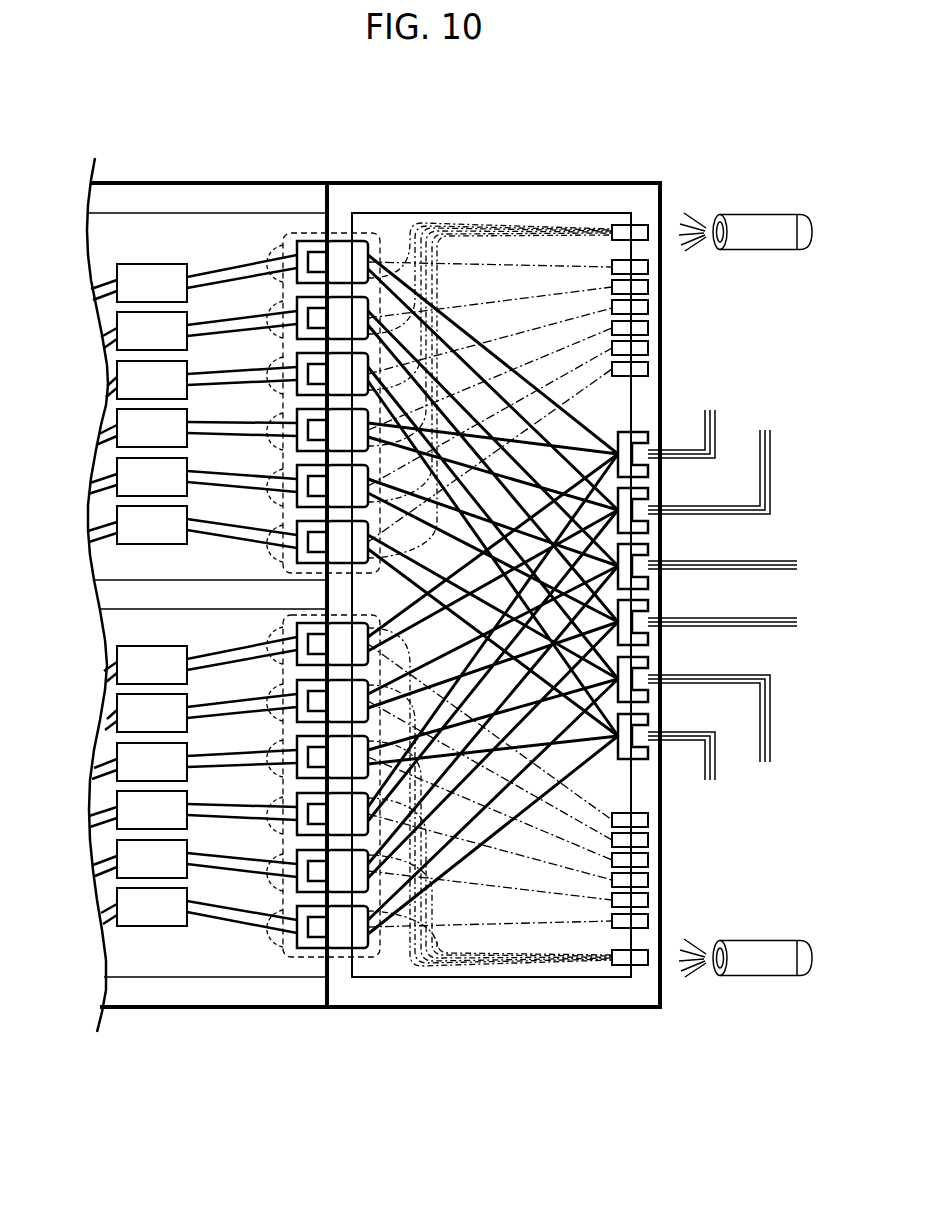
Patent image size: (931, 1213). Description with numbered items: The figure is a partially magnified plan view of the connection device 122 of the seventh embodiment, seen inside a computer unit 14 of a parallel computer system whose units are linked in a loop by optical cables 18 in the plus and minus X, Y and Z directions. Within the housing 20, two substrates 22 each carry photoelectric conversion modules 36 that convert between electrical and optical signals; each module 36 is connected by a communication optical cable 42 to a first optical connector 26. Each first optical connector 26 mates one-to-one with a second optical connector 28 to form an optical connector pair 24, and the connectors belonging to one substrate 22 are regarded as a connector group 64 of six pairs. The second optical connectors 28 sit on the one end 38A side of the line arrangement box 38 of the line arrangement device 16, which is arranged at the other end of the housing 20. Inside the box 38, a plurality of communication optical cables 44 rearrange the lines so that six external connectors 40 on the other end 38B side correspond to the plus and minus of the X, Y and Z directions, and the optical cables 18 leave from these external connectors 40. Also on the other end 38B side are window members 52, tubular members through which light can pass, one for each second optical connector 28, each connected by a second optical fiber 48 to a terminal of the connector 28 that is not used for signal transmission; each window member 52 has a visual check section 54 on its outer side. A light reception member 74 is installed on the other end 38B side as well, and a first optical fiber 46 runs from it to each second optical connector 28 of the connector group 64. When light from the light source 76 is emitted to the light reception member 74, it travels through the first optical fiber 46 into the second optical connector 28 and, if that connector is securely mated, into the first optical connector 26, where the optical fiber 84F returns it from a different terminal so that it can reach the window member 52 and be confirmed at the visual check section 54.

The computer unit 14 is at (99, 1046).
The line arrangement device 16 is at (495, 1019).
The optical cable 18 is at (759, 446).
The housing 20 is at (183, 1017).
The substrate 22 is at (122, 201).
The optical connector pair 24 is at (375, 133).
The first optical connector 26 is at (305, 240).
The second optical connector 28 is at (348, 240).
The photoelectric conversion module 36 is at (135, 264).
The line arrangement box 38 is at (540, 990).
The one end of line arrangement box 38A is at (362, 978).
The other end of line arrangement box 38B is at (634, 984).
The external connector 40 is at (655, 434).
The communication optical cable 42 is at (242, 264).
The communication optical cable 44 is at (402, 578).
The first optical fiber 46 is at (578, 228).
The second optical fiber 48 is at (606, 262).
The window member 52 is at (645, 257).
The visual check section 54 is at (650, 270).
The connector group 64 is at (388, 225).
The light reception member 74 is at (651, 224).
The light source 76 is at (768, 252).
The optical fiber 84F is at (280, 247).
The connection device 122 is at (424, 126).